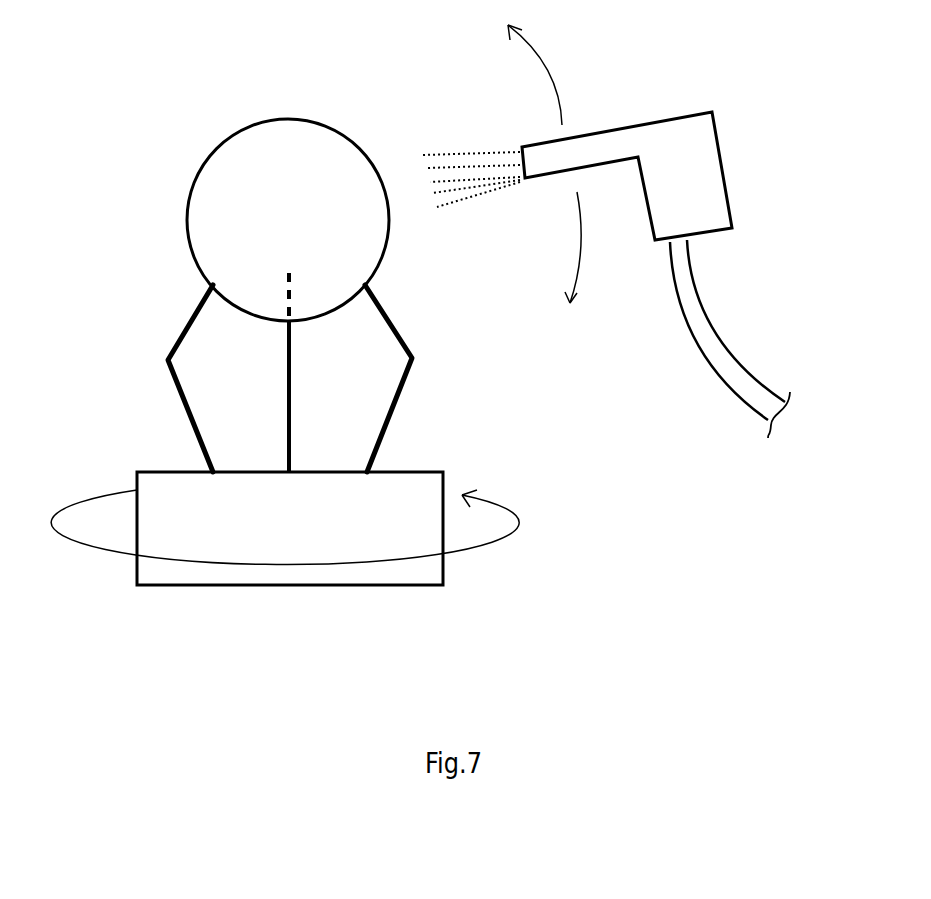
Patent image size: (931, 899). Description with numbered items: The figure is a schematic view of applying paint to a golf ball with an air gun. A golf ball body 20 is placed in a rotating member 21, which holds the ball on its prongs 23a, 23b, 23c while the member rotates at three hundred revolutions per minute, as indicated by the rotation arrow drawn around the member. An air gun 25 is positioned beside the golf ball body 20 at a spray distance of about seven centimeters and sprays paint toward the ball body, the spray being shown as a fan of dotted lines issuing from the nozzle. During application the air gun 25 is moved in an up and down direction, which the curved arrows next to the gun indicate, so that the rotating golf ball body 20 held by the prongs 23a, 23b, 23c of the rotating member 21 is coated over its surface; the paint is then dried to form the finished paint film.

The golf ball body 20 is at (262, 148).
The rotating member 21 is at (422, 488).
The prong 23a is at (183, 327).
The prong 23b is at (407, 340).
The prong 23c is at (287, 420).
The air gun 25 is at (692, 158).